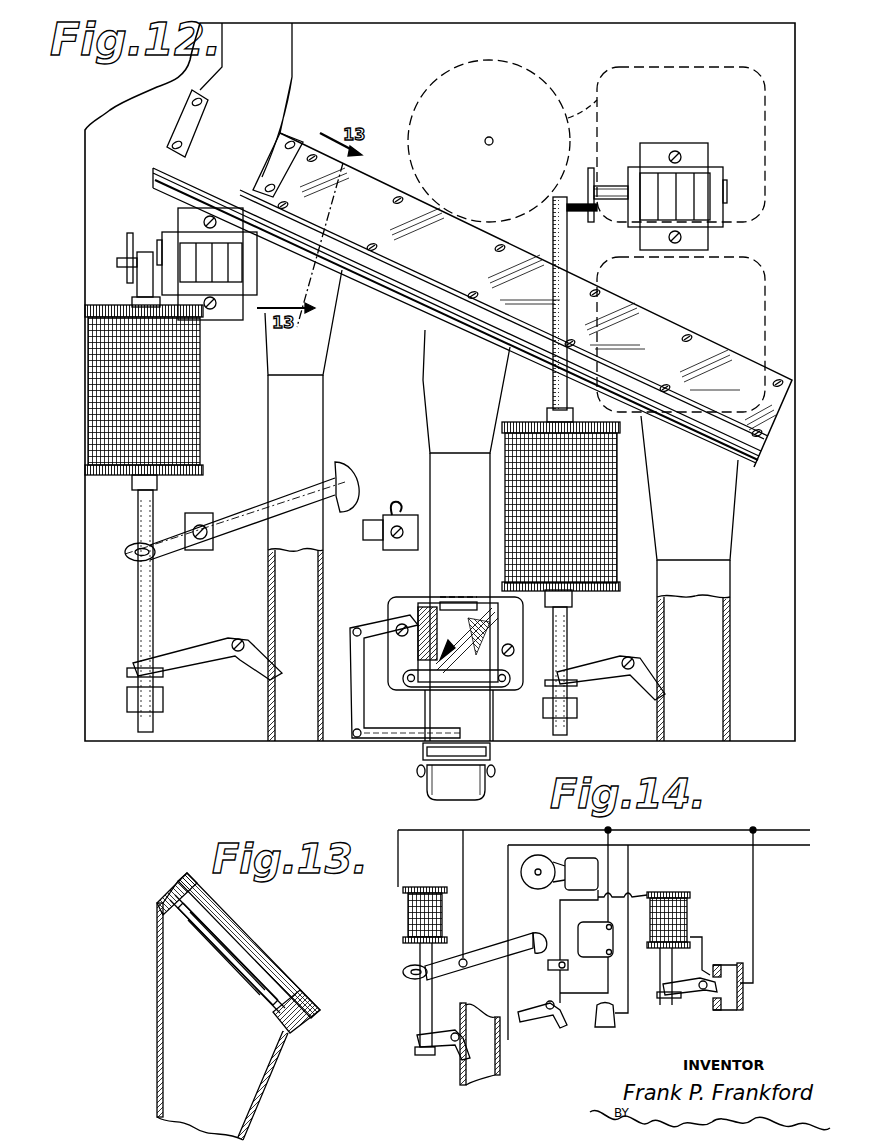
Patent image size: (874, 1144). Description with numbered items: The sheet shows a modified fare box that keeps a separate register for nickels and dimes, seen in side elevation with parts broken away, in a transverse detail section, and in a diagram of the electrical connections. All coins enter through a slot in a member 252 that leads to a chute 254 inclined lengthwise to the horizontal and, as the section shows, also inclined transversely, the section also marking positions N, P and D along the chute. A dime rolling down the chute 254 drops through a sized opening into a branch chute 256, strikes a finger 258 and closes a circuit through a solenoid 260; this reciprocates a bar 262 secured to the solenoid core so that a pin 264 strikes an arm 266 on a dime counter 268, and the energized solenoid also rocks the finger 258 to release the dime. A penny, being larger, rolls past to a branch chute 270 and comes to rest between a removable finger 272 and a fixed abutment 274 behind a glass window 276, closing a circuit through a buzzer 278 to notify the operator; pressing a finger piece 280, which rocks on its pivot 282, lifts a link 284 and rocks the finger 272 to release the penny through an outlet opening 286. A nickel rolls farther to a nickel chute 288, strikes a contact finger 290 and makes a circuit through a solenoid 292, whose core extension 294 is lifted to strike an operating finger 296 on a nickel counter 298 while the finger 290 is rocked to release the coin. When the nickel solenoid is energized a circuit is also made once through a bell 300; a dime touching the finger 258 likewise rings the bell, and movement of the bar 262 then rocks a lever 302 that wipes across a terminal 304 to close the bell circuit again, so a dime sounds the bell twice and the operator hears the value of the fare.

In FIG. 12, the member 252 is at (287, 50).
In FIG. 12, the chute 254 is at (160, 163).
In FIG. 13, the chute 254 is at (297, 977).
In FIG. 12, the branch chute 256 is at (310, 417).
In FIG. 13, the branch chute 256 is at (272, 1098).
In FIG. 12, the finger 258 is at (263, 663).
In FIG. 14, the finger 258 is at (452, 1057).
In FIG. 12, the solenoid 260 is at (200, 418).
In FIG. 14, the solenoid 260 is at (413, 918).
In FIG. 12, the bar 262 is at (130, 283).
In FIG. 14, the bar 262 is at (420, 1008).
In FIG. 12, the pin 264 is at (117, 263).
In FIG. 12, the arm 266 is at (125, 233).
In FIG. 12, the dime counter 268 is at (173, 233).
In FIG. 12, the branch chute 270 is at (466, 535).
In FIG. 12, the removable finger 272 is at (440, 660).
In FIG. 14, the removable finger 272 is at (557, 1013).
In FIG. 12, the fixed abutment 274 is at (487, 660).
In FIG. 14, the fixed abutment 274 is at (601, 1020).
In FIG. 12, the glass window 276 is at (433, 617).
In FIG. 14, the buzzer 278 is at (597, 953).
In FIG. 12, the finger piece 280 is at (473, 787).
In FIG. 12, the pivot 282 is at (417, 773).
In FIG. 12, the link 284 is at (365, 707).
In FIG. 12, the outlet opening 286 is at (478, 752).
In FIG. 12, the nickel chute 288 is at (713, 515).
In FIG. 12, the contact finger 290 is at (660, 690).
In FIG. 14, the contact finger 290 is at (703, 988).
In FIG. 12, the solenoid 292 is at (603, 583).
In FIG. 14, the solenoid 292 is at (690, 917).
In FIG. 12, the solenoid core extension 294 is at (563, 248).
In FIG. 12, the operating finger 296 is at (595, 167).
In FIG. 12, the nickel counter 298 is at (660, 170).
In FIG. 14, the bell 300 is at (573, 885).
In FIG. 12, the lever 302 is at (243, 513).
In FIG. 14, the lever 302 is at (490, 950).
In FIG. 12, the terminal 304 is at (370, 538).
In FIG. 14, the terminal 304 is at (553, 965).
In FIG. 13, the strip N is at (230, 913).
In FIG. 13, the strip P is at (236, 940).
In FIG. 13, the strip D is at (250, 967).